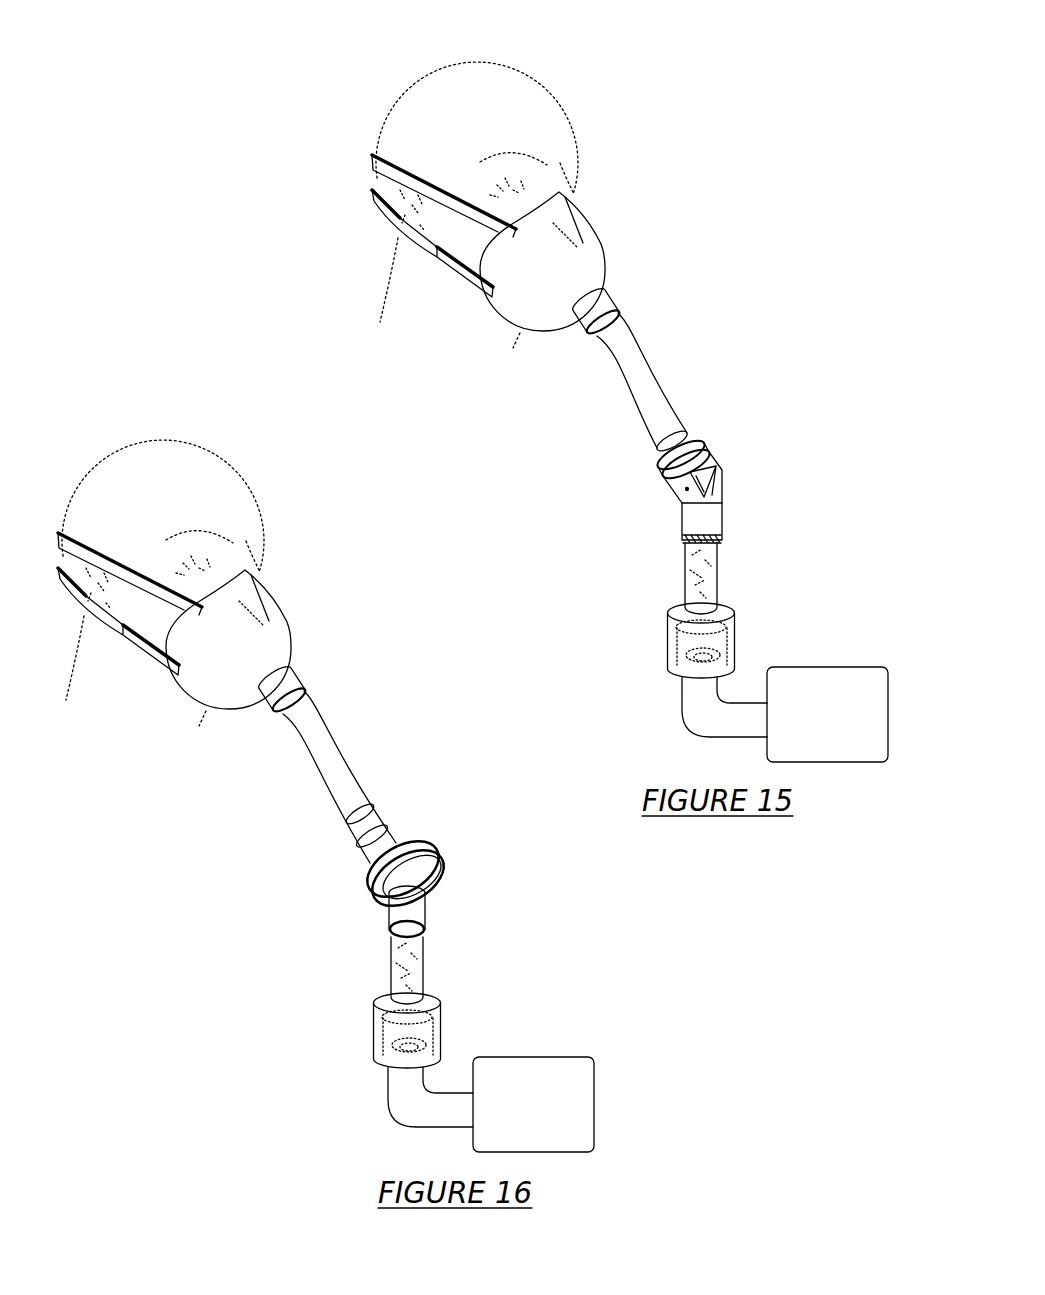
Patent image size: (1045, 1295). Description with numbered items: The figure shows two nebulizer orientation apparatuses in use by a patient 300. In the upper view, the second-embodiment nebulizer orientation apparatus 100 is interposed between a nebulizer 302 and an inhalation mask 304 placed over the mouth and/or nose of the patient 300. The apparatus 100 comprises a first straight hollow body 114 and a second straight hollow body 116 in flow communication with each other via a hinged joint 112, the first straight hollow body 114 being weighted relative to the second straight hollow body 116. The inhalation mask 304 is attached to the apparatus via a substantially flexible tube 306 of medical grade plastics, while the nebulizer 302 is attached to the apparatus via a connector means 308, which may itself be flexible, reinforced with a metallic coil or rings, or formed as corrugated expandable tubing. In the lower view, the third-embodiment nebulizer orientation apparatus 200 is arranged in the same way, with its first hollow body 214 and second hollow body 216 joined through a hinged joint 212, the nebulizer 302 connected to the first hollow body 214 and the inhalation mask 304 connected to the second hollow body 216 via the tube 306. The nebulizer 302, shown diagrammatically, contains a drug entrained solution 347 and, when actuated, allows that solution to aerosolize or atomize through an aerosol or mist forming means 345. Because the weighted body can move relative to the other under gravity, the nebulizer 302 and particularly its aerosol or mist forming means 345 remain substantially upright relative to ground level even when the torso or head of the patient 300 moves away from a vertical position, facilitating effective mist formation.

In FIG. 15, the nebulizer orientation apparatus 100 is at (667, 494).
In FIG. 15, the hinged joint 112 is at (740, 479).
In FIG. 15, the first straight hollow body 114 is at (712, 519).
In FIG. 15, the second straight hollow body 116 is at (694, 447).
In FIG. 16, the nebulizer orientation apparatus 200 is at (411, 852).
In FIG. 16, the hinged joint 212 is at (357, 895).
In FIG. 16, the first hollow body 214 is at (414, 908).
In FIG. 16, the second hollow body 216 is at (374, 810).
In FIG. 15, the patient 300 is at (563, 104).
In FIG. 16, the patient 300 is at (211, 583).
In FIG. 15, the nebulizer 302 is at (752, 674).
In FIG. 16, the nebulizer 302 is at (466, 1051).
In FIG. 15, the inhalation mask 304 is at (604, 246).
In FIG. 16, the inhalation mask 304 is at (280, 642).
In FIG. 15, the flexible tube 306 is at (652, 367).
In FIG. 16, the flexible tube 306 is at (338, 745).
In FIG. 15, the connector means 308 is at (684, 562).
In FIG. 16, the connector means 308 is at (390, 965).
In FIG. 15, the aerosol or mist forming means 345 is at (675, 668).
In FIG. 16, the aerosol or mist forming means 345 is at (382, 1060).
In FIG. 15, the drug entrained solution 347 is at (677, 640).
In FIG. 16, the drug entrained solution 347 is at (373, 1030).